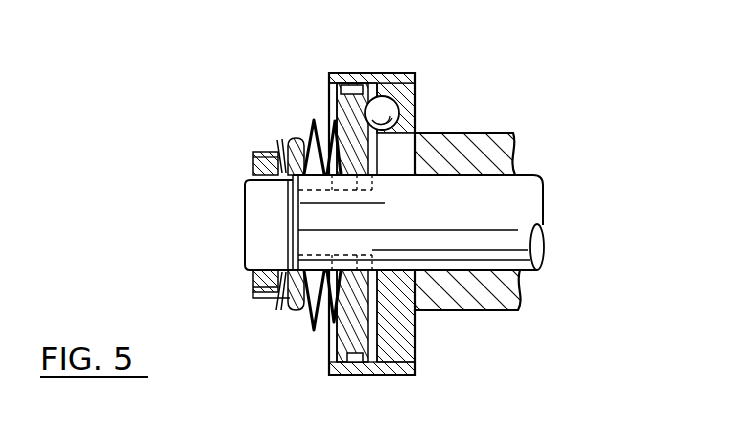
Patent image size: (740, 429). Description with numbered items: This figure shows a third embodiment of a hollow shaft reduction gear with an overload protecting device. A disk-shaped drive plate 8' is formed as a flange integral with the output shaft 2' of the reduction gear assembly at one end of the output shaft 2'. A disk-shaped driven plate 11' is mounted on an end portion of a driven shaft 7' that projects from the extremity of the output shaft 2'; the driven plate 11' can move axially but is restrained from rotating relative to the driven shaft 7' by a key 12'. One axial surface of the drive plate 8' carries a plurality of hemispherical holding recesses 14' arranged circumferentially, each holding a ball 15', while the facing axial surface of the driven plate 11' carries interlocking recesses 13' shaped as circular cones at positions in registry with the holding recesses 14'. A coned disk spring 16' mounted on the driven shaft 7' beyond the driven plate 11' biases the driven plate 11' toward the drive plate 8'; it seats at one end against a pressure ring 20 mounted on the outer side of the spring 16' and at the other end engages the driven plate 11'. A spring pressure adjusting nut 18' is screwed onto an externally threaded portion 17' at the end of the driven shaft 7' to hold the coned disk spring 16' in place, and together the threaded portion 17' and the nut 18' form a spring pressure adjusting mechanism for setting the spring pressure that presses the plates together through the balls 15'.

The output shaft 2' is at (505, 200).
The driven shaft 7' is at (456, 217).
The drive plate 8' is at (414, 208).
The driven plate 11' is at (315, 333).
The key 12' is at (371, 222).
The interlocking recesses 13' is at (313, 110).
The holding recesses 14' is at (453, 108).
The ball 15' is at (414, 76).
The coned disk spring 16' is at (283, 201).
The externally threaded portion 17' is at (233, 204).
The spring pressure adjusting nut 18' is at (235, 196).
The pressure ring 20 is at (287, 312).